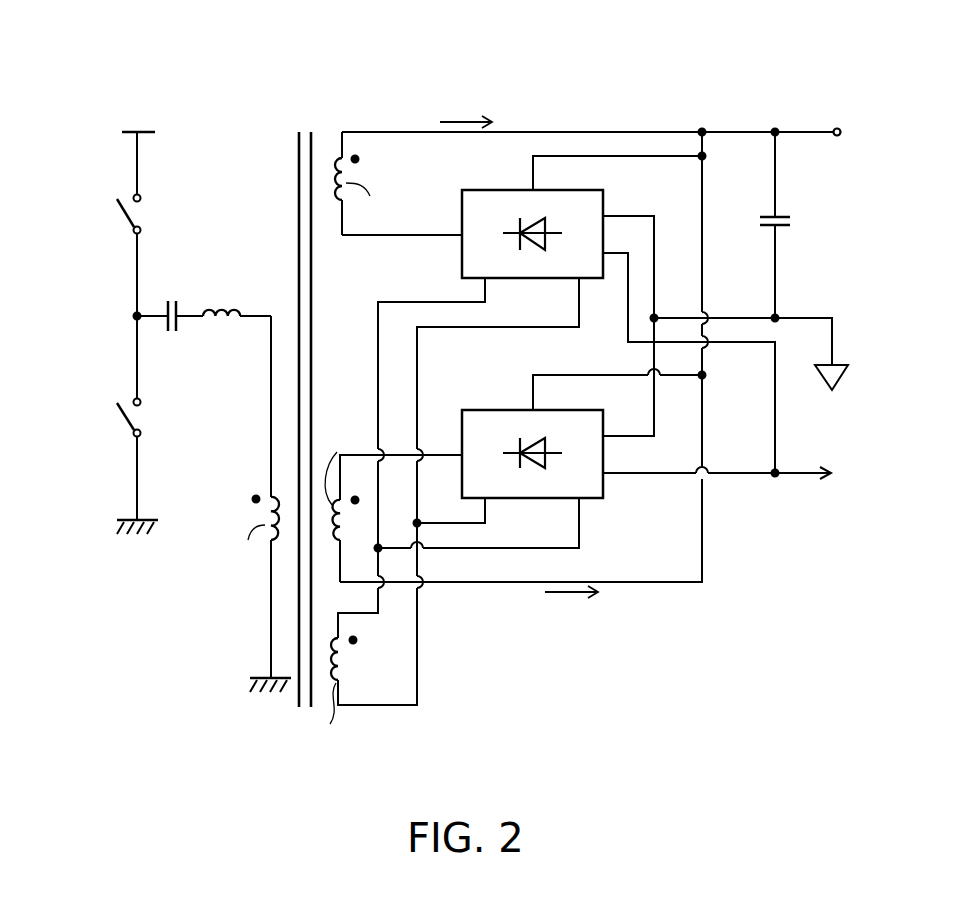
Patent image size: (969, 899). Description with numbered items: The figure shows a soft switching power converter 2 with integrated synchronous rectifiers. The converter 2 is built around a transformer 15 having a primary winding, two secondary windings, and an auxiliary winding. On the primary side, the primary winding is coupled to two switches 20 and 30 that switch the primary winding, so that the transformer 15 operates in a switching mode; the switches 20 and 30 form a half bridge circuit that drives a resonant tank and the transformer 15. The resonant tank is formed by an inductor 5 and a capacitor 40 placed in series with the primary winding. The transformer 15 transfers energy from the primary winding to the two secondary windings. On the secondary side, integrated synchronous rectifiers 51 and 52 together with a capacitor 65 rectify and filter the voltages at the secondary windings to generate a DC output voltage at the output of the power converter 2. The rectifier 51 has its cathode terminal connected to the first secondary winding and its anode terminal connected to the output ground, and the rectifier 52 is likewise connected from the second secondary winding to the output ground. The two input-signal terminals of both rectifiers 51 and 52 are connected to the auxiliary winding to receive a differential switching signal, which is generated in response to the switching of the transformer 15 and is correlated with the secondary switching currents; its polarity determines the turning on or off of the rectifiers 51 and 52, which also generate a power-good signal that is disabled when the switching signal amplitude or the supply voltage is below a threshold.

The soft switching power converter 2 is at (792, 41).
The transformer 15 is at (297, 155).
The switch 20 is at (128, 199).
The switch 30 is at (128, 402).
The capacitor 40 is at (169, 300).
The inductor 5 is at (222, 308).
The integrated synchronous rectifier 51 is at (497, 190).
The integrated synchronous rectifier 52 is at (605, 488).
The capacitor 65 is at (760, 221).